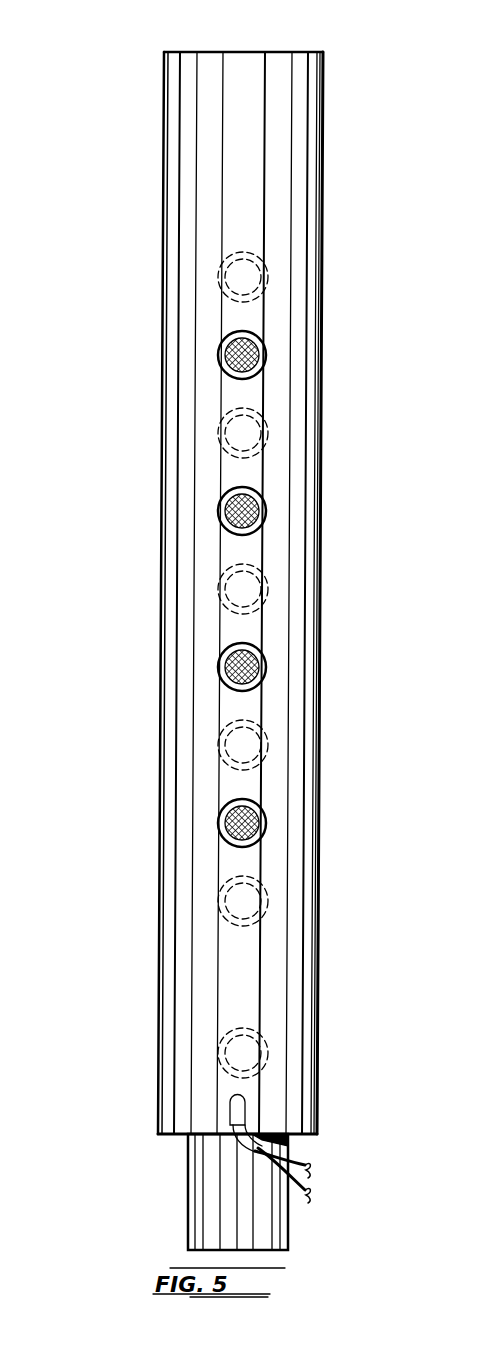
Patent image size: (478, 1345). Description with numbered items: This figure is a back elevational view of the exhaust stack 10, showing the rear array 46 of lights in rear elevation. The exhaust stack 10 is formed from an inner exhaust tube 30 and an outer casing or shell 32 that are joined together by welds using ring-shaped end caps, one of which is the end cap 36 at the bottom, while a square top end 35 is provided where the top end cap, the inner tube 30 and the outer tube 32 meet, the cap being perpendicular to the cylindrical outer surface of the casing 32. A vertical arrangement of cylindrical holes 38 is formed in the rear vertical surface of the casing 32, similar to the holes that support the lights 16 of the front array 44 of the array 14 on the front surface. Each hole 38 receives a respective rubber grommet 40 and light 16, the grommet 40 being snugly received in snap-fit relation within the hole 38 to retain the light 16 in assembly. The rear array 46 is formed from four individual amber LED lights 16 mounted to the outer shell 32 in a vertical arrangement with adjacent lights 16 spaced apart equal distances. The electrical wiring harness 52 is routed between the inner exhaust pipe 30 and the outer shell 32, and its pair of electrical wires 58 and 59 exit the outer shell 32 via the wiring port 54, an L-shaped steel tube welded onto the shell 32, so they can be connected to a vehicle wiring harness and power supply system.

The exhaust stack 10 is at (95, 133).
The array 14 is at (157, 227).
The light 16 is at (262, 530).
The inner exhaust tube 30 is at (187, 1237).
The outer casing 32 is at (323, 185).
The square top end 35 is at (312, 52).
The end cap 36 is at (173, 1135).
The cylindrical hole 38 is at (223, 528).
The rubber grommet 40 is at (267, 508).
The front array 44 is at (280, 420).
The array 46 is at (208, 498).
The electrical wiring harness 52 is at (242, 1145).
The wiring port 54 is at (250, 1103).
The electrical wire 58 is at (305, 1160).
The electrical wire 59 is at (305, 1192).